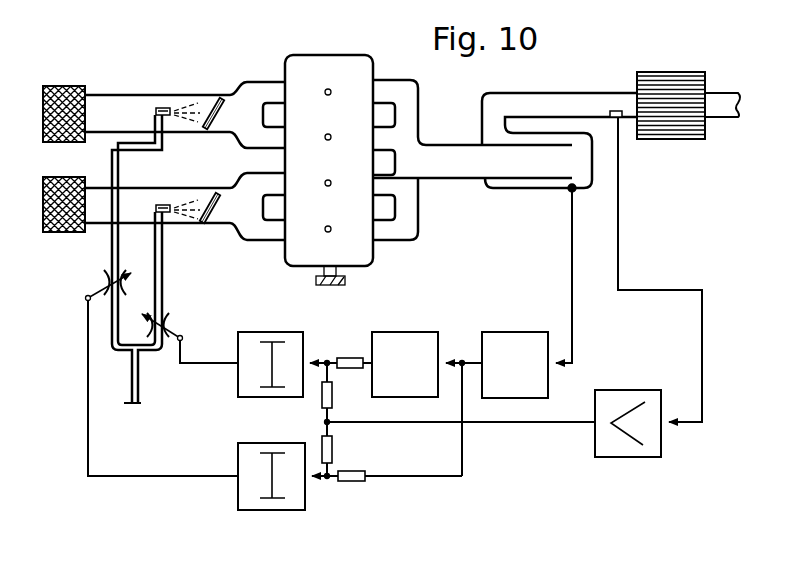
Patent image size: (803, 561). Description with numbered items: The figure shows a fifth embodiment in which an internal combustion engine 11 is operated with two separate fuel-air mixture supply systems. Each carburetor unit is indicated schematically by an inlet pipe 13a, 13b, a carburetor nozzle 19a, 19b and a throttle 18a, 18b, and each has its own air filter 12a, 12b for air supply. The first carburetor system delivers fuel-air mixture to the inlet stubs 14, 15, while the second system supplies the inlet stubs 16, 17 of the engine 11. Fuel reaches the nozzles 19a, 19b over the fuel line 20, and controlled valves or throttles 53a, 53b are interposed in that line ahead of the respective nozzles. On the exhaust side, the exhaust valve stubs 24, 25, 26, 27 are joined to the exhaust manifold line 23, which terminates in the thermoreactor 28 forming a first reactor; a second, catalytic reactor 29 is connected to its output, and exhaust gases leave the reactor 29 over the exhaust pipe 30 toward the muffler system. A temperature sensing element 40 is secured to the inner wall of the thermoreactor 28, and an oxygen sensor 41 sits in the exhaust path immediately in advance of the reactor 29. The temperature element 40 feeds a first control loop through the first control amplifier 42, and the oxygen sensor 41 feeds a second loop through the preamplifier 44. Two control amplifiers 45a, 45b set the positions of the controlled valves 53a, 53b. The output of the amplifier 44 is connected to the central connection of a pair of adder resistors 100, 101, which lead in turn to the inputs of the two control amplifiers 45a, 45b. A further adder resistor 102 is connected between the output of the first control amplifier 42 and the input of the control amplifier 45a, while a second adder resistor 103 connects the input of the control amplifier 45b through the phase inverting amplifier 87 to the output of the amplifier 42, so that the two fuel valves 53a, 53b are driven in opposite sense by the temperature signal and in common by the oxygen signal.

The internal combustion engine 11 is at (364, 73).
The air filter 12a is at (60, 86).
The air filter 12b is at (66, 230).
The inlet pipe 13a is at (107, 95).
The inlet pipe 13b is at (133, 197).
The inlet stub 14 is at (268, 90).
The inlet stub 15 is at (263, 137).
The inlet stub 16 is at (260, 182).
The inlet stub 17 is at (273, 231).
The throttle 18a is at (213, 105).
The throttle 18b is at (214, 222).
The carburetor nozzle 19a is at (163, 107).
The carburetor nozzle 19b is at (166, 204).
The fuel line 20 is at (132, 389).
The exhaust manifold line 23 is at (469, 154).
The exhaust valve stub 24 is at (390, 90).
The exhaust valve stub 25 is at (395, 138).
The exhaust valve stub 26 is at (385, 184).
The exhaust valve stub 27 is at (385, 232).
The thermoreactor 28 is at (532, 189).
The second reactor 29 is at (661, 81).
The exhaust pipe 30 is at (723, 96).
The temperature sensing element 40 is at (575, 190).
The oxygen sensor 41 is at (620, 118).
The first control amplifier 42 is at (504, 338).
The preamplifier 44 is at (619, 397).
The control amplifier 45a is at (238, 498).
The control amplifier 45b is at (268, 336).
The controlled valve 53a is at (104, 283).
The controlled valve 53b is at (166, 323).
The phase inverting amplifier 87 is at (393, 338).
The adder resistor 100 is at (333, 395).
The adder resistor 101 is at (333, 448).
The adder resistor 102 is at (351, 481).
The resistor 103 is at (349, 359).